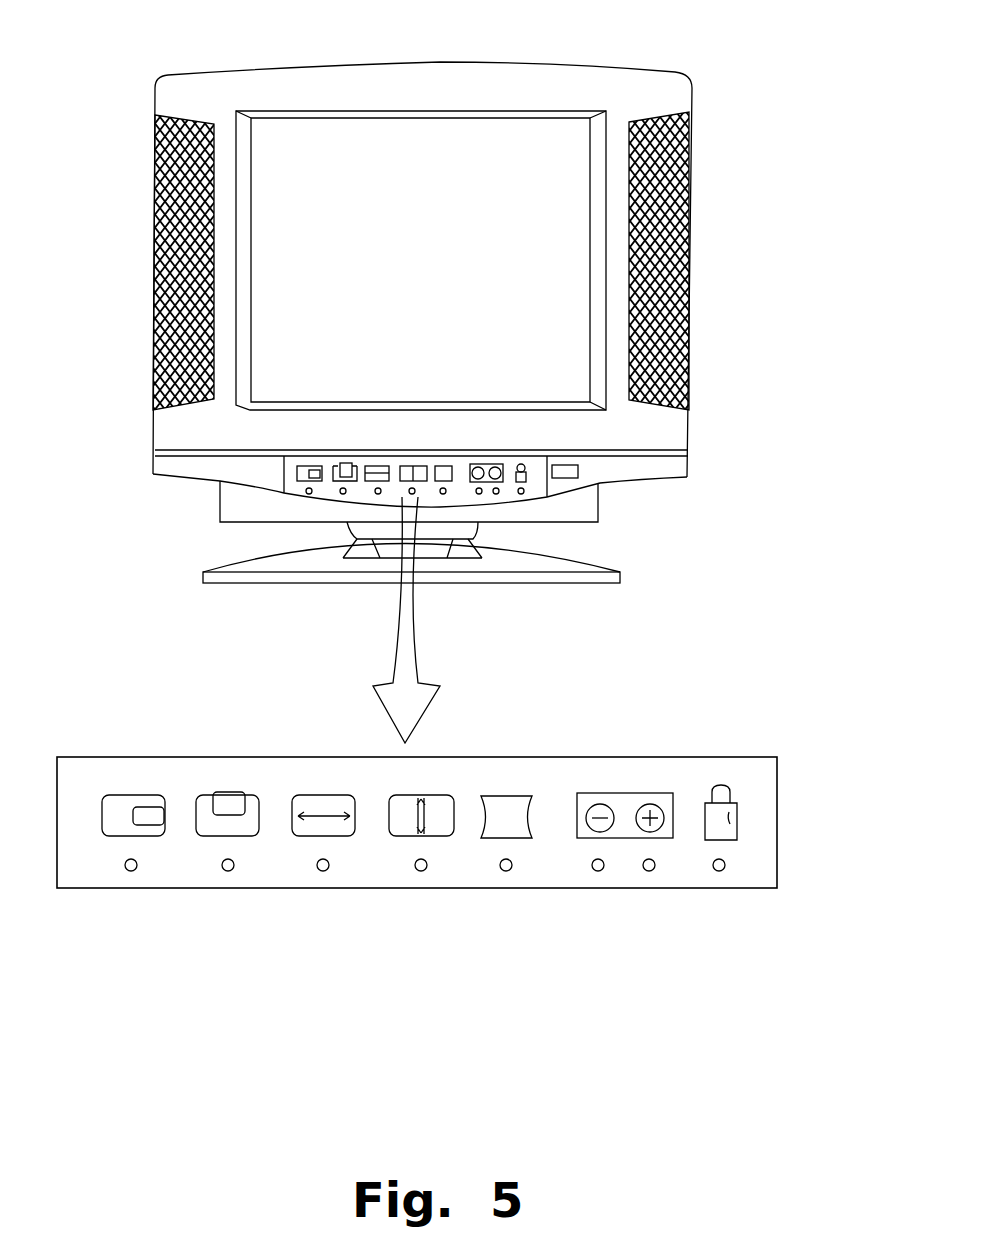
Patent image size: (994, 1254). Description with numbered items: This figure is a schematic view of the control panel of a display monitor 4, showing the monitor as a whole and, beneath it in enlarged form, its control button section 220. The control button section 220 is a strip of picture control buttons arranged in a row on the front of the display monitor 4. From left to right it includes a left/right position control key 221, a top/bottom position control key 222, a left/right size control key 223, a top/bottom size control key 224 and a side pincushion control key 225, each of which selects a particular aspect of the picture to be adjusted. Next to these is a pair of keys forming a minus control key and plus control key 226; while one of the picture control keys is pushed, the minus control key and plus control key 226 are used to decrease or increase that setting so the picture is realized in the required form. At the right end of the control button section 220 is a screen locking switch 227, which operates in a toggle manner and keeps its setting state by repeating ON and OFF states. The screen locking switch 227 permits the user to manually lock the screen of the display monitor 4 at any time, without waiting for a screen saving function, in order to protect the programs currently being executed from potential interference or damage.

The display monitor 4 is at (487, 64).
The control button section 220 is at (292, 493).
The left/right position control key 221 is at (120, 825).
The top/bottom position control key 222 is at (213, 827).
The left/right size control key 223 is at (312, 830).
The top/bottom size control key 224 is at (405, 827).
The side pincushion control key 225 is at (497, 828).
The minus control key and plus control key 226 is at (627, 838).
The screen locking switch 227 is at (713, 840).